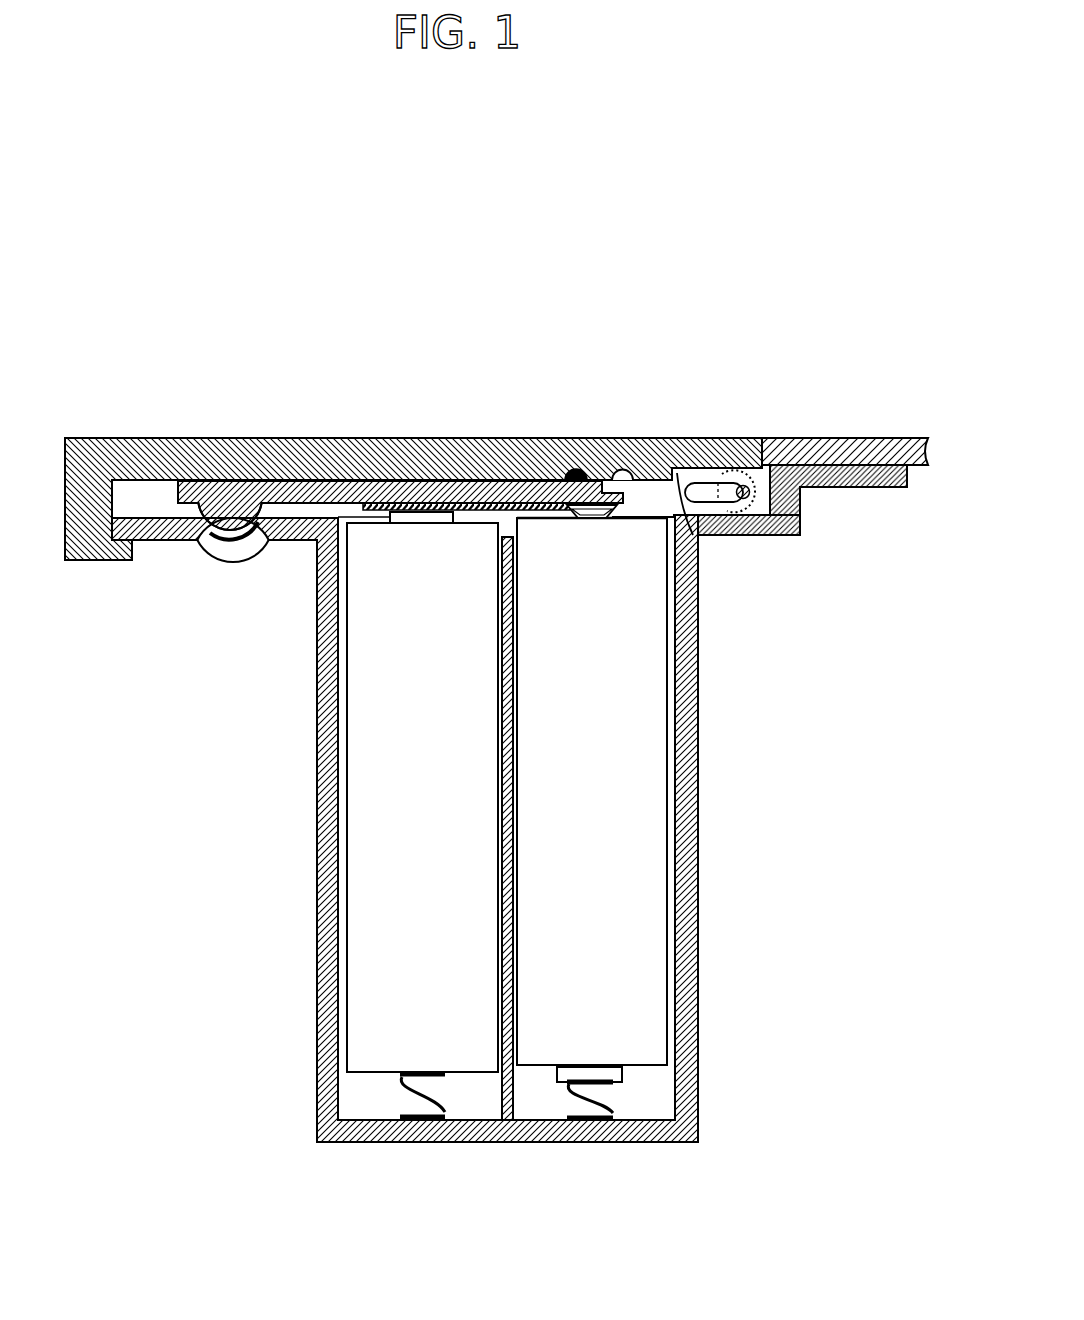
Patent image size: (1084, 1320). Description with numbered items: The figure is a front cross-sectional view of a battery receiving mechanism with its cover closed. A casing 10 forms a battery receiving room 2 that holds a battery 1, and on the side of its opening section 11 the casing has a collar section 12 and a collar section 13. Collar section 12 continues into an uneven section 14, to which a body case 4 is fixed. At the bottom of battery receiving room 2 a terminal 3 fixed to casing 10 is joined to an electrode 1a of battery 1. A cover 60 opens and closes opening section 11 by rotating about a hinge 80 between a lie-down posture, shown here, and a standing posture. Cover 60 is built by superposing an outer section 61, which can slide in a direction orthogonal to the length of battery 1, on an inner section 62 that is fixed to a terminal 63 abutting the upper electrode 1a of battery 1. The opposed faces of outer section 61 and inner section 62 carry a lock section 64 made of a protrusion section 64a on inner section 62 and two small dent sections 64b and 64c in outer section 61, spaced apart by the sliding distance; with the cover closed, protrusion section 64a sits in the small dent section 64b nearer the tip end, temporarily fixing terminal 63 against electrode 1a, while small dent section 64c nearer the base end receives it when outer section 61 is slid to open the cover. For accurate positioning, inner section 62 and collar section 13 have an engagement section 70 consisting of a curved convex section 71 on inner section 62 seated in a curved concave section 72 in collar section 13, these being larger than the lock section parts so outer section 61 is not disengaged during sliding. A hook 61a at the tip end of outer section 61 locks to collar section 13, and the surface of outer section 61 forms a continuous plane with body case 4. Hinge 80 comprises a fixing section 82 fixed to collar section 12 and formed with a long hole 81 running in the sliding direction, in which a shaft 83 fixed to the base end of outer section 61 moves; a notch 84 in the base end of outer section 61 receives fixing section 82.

The battery 1 is at (367, 883).
The electrode 1a is at (647, 523).
The battery receiving room 2 is at (478, 1097).
The terminal 3 is at (420, 1097).
The body case 4 is at (893, 440).
The casing 10 is at (450, 868).
The opening section 11 is at (357, 518).
The collar section 12 is at (745, 527).
The collar section 13 is at (302, 530).
The uneven section 14 is at (793, 503).
The cover 60 is at (413, 451).
The outer section 61 is at (413, 484).
The hook 61a is at (117, 550).
The inner section 62 is at (262, 487).
The terminal 63 is at (466, 427).
The lock section 64 is at (568, 353).
The protrusion section 64a is at (572, 473).
The small dent section 64b is at (581, 478).
The small dent section 64c is at (624, 478).
The engagement section 70 is at (192, 619).
The convex section 71 is at (232, 518).
The concave section 72 is at (215, 535).
The hinge 80 is at (759, 466).
The long hole 81 is at (700, 492).
The fixing section 82 is at (732, 485).
The shaft 83 is at (760, 468).
The notch 84 is at (693, 535).